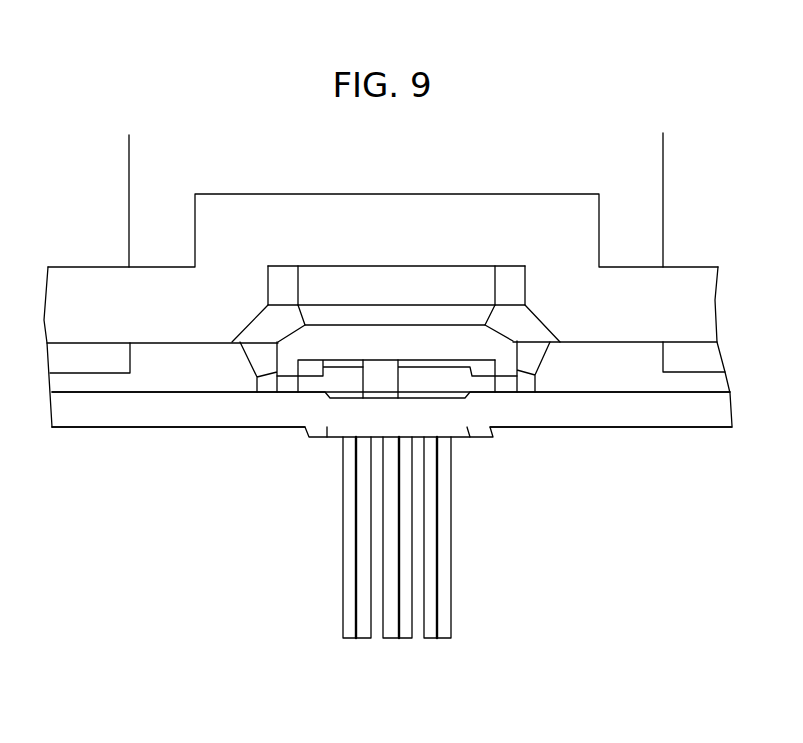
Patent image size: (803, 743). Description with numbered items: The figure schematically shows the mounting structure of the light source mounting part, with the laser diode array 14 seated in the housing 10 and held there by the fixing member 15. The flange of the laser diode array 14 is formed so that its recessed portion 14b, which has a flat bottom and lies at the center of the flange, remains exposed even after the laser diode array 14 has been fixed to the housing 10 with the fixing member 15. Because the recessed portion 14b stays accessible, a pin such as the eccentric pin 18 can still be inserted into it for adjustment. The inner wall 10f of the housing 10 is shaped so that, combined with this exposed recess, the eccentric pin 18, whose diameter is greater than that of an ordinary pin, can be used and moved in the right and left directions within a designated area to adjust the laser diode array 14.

The housing 10 is at (254, 203).
The inner wall of the housing 10f is at (308, 268).
The eccentric pin 18 is at (412, 338).
The laser diode array 14 is at (450, 398).
The recessed portion 14b is at (373, 400).
The fixing member 15 is at (663, 415).